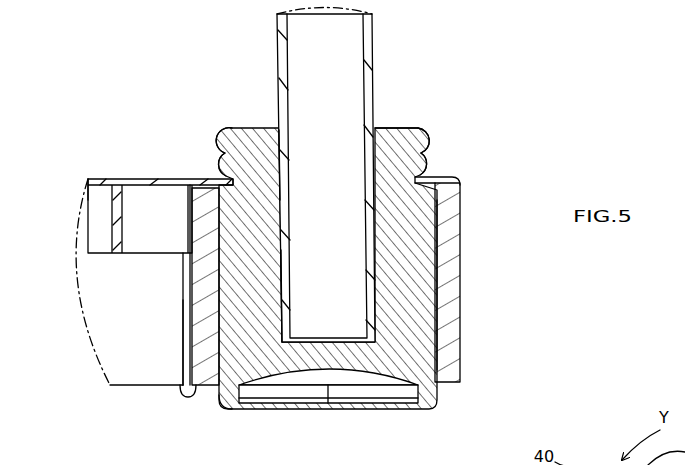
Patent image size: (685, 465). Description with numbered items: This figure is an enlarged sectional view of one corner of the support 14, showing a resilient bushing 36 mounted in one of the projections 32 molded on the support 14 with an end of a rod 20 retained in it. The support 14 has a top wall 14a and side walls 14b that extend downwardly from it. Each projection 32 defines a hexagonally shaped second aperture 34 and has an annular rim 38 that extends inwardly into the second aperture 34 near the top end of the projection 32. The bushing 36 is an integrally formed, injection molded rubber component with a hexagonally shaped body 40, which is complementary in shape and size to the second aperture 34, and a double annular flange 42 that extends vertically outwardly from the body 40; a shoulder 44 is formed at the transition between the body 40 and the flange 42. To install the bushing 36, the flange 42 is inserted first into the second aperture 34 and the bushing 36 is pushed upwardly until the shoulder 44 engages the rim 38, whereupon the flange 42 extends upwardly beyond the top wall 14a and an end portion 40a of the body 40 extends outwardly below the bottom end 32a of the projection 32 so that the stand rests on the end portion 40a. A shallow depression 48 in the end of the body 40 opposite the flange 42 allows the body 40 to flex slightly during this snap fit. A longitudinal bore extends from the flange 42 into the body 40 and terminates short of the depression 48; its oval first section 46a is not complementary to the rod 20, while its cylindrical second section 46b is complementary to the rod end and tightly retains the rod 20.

The support 14 is at (148, 178).
The top wall 14a is at (90, 179).
The side walls 14b is at (118, 338).
The rod 20 is at (370, 67).
The projection 32 is at (458, 247).
The bottom end 32a is at (177, 378).
The second aperture 34 is at (430, 318).
The bushing 36 is at (426, 144).
The annular rim 38 is at (422, 176).
The body 40 is at (427, 352).
The end portion 40a is at (223, 397).
The double annular flange 42 is at (418, 132).
The shoulder 44 is at (237, 165).
The first section 46a is at (274, 157).
The second section 46b is at (283, 287).
The shallow depression 48 is at (297, 377).